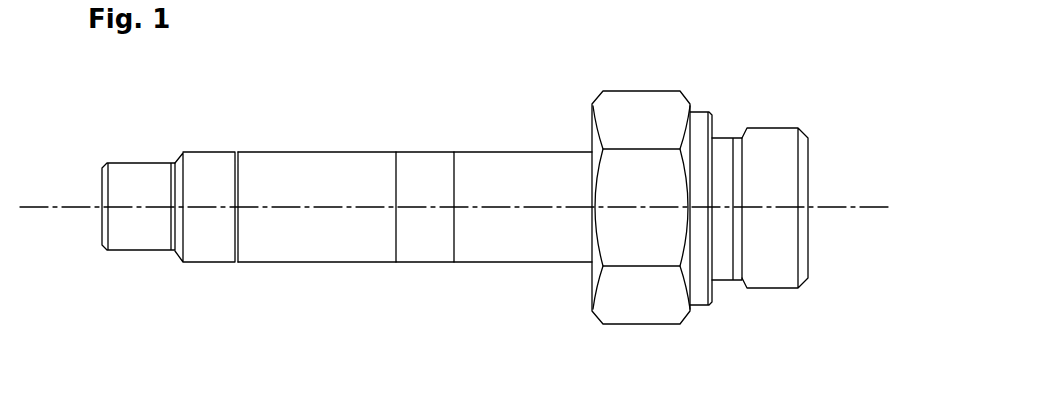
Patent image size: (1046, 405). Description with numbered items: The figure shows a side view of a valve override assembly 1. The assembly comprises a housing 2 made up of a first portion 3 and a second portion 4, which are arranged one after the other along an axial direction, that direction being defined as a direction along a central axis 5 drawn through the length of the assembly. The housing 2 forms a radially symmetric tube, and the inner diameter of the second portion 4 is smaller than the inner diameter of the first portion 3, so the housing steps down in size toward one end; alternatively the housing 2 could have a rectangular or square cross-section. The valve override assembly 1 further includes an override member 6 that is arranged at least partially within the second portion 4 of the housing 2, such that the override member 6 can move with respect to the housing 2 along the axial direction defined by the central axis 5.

The valve override assembly 1 is at (184, 116).
The housing 2 is at (423, 160).
The first portion 3 is at (535, 247).
The second portion 4 is at (208, 256).
The central axis 5 is at (63, 207).
The override member 6 is at (125, 238).